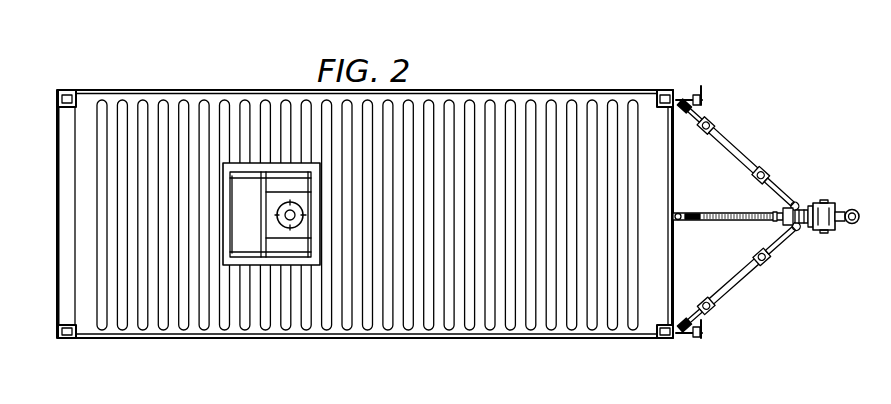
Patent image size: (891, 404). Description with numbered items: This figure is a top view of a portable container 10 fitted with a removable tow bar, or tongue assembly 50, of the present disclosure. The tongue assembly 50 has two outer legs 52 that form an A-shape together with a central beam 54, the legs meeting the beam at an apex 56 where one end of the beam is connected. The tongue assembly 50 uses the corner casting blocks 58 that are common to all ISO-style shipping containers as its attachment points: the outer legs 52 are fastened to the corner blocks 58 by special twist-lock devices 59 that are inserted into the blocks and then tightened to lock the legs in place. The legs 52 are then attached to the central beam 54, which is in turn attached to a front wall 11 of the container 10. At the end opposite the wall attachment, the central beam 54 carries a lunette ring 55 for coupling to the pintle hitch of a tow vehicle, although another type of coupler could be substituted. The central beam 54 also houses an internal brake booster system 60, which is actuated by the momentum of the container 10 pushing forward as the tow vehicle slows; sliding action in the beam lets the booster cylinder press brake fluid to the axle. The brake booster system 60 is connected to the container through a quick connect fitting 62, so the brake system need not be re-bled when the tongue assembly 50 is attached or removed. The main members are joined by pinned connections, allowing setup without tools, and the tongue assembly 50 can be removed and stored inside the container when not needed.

The container 10 is at (540, 79).
The front wall 11 is at (677, 167).
The tongue assembly 50 is at (774, 220).
The outer legs 52 is at (797, 200).
The central beam 54 is at (728, 219).
The lunette ring 55 is at (852, 209).
The apex 56 is at (800, 207).
The corner casting blocks 58 is at (665, 340).
The twist-lock devices 59 is at (686, 340).
The brake booster system 60 is at (733, 221).
The quick connect fitting 62 is at (678, 224).